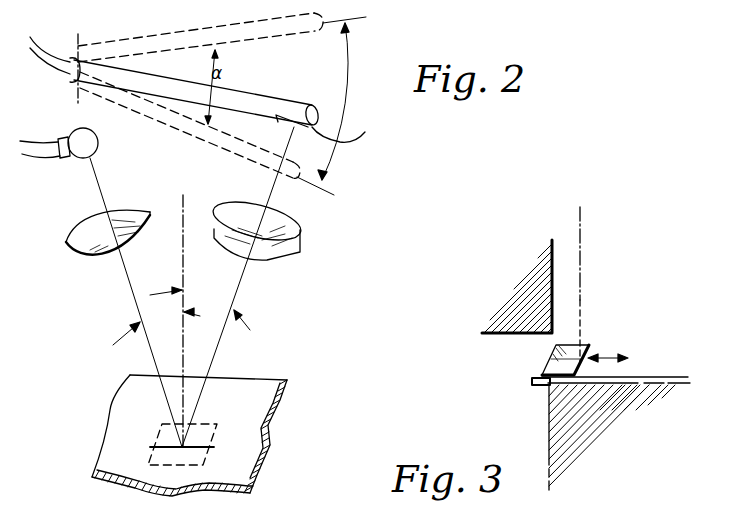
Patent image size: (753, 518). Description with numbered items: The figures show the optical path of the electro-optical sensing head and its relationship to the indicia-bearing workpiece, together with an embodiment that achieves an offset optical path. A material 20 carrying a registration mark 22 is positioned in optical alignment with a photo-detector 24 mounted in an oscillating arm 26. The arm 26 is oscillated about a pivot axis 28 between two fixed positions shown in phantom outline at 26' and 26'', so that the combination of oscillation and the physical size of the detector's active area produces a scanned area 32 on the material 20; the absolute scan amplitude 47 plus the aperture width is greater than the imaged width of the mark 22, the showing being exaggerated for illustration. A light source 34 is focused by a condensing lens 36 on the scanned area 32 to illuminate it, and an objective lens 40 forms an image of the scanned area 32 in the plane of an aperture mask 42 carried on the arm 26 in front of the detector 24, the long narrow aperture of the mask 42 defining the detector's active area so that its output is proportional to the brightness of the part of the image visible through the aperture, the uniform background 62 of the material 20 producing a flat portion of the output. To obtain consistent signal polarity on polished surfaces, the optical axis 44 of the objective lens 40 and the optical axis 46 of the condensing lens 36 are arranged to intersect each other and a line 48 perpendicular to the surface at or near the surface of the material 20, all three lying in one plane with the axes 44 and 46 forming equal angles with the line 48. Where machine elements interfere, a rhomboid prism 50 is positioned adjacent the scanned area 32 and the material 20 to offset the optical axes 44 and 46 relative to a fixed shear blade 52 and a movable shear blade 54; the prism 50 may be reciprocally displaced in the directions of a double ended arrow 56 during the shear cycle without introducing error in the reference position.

In FIG. 2, the material 20 is at (118, 412).
In FIG. 3, the material 20 is at (605, 377).
In FIG. 2, the registration mark 22 is at (200, 436).
In FIG. 2, the photo-detector 24 is at (350, 132).
In FIG. 2, the oscillating arm 26 is at (197, 91).
In FIG. 2, the fixed position of arm 26' is at (200, 44).
In FIG. 2, the fixed position of arm 26'' is at (190, 133).
In FIG. 2, the pivot axis 28 is at (79, 35).
In FIG. 2, the scanned area 32 is at (160, 434).
In FIG. 3, the scanned area 32 is at (540, 384).
In FIG. 2, the light source 34 is at (62, 134).
In FIG. 2, the condensing lens 36 is at (92, 212).
In FIG. 2, the objective lens 40 is at (278, 210).
In FIG. 2, the aperture mask 42 is at (292, 122).
In FIG. 2, the optical axis 44 is at (238, 304).
In FIG. 3, the optical axis 44 is at (582, 243).
In FIG. 2, the optical axis 46 is at (137, 307).
In FIG. 3, the optical axis 46 is at (582, 308).
In FIG. 2, the scan amplitude 47 is at (331, 106).
In FIG. 2, the line perpendicular to the surface 48 is at (183, 266).
In FIG. 3, the rhomboid prism 50 is at (556, 348).
In FIG. 3, the fixed shear blade 52 is at (609, 446).
In FIG. 3, the movable shear blade 54 is at (519, 299).
In FIG. 3, the double ended arrow 56 is at (607, 352).
In FIG. 2, the uniform background 62 is at (231, 452).